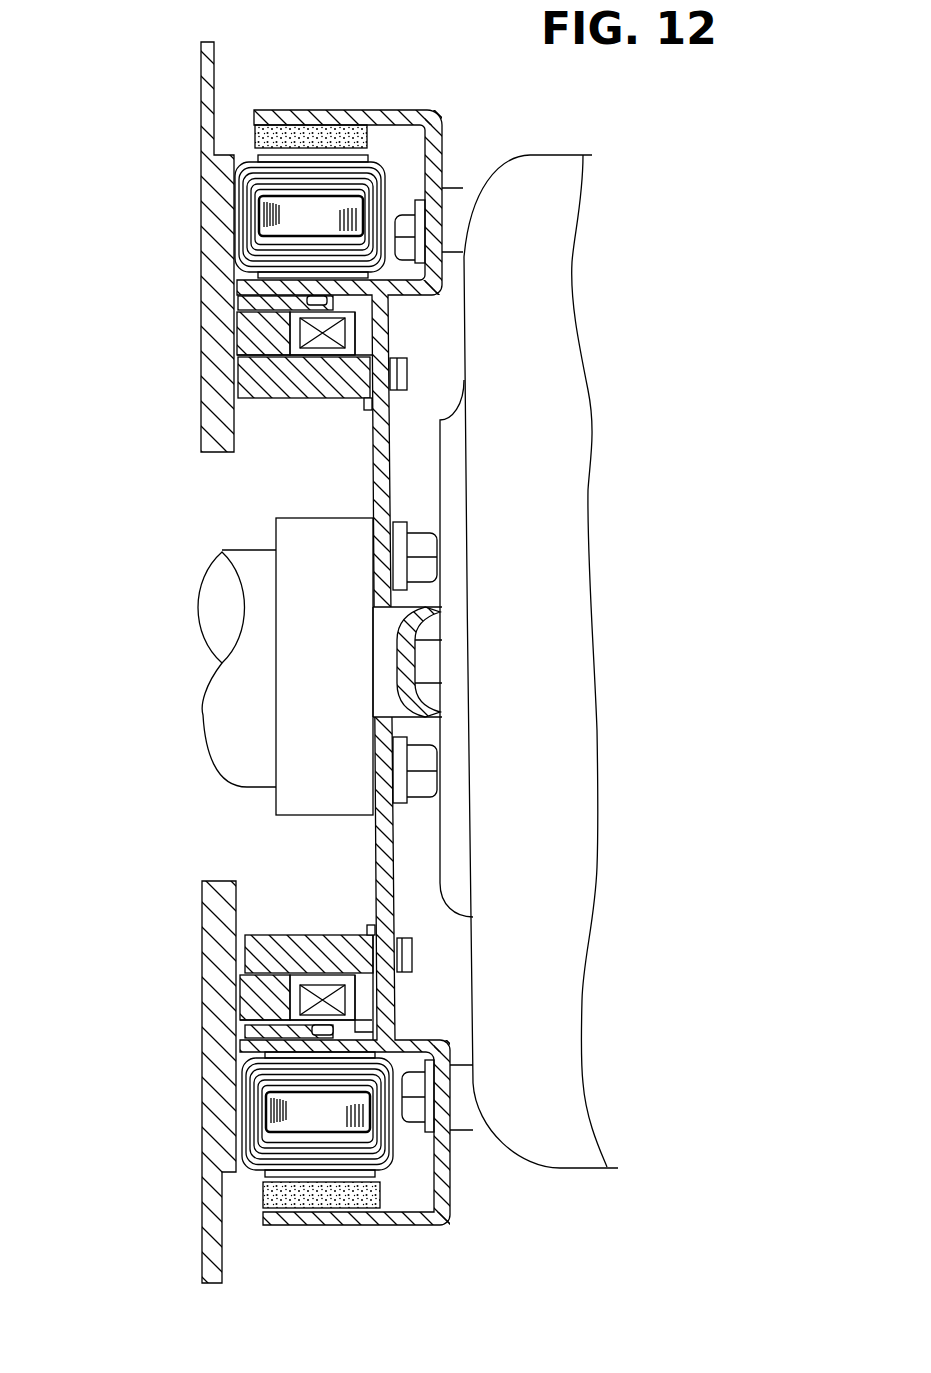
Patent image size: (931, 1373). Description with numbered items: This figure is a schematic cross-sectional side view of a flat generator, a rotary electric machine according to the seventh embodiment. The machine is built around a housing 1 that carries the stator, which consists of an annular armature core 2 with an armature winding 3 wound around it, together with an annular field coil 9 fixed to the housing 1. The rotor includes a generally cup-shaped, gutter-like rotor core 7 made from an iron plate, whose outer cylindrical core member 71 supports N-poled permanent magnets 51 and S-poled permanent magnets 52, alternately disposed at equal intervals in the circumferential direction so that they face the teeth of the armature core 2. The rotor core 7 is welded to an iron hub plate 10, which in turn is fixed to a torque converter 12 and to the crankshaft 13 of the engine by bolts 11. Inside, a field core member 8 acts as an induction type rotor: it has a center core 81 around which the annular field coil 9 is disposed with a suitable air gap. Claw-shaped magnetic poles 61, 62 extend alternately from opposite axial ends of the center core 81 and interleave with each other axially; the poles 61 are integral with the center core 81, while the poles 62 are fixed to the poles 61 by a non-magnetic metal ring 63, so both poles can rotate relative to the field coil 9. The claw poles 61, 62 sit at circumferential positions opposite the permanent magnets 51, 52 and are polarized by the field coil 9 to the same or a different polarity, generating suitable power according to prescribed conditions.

The housing 1 is at (200, 94).
The annular armature core 2 is at (257, 212).
The armature winding 3 is at (243, 230).
The permanent magnet (N-poled) 51 is at (292, 133).
The permanent magnet (S-poled) 52 is at (330, 1192).
The claw-shaped magnetic pole 61 is at (300, 288).
The claw-shaped magnetic pole 62 is at (312, 1027).
The non-magnetic metal ring 63 is at (330, 303).
The rotor core 7 is at (293, 634).
The outer cylindrical core member 71 is at (390, 113).
The field core member 8 is at (216, 665).
The center core 81 is at (262, 385).
The annular field coil 9 is at (333, 342).
The hub plate 10 is at (373, 443).
The bolt 11 is at (421, 533).
The torque converter 12 is at (440, 862).
The crankshaft 13 is at (295, 722).